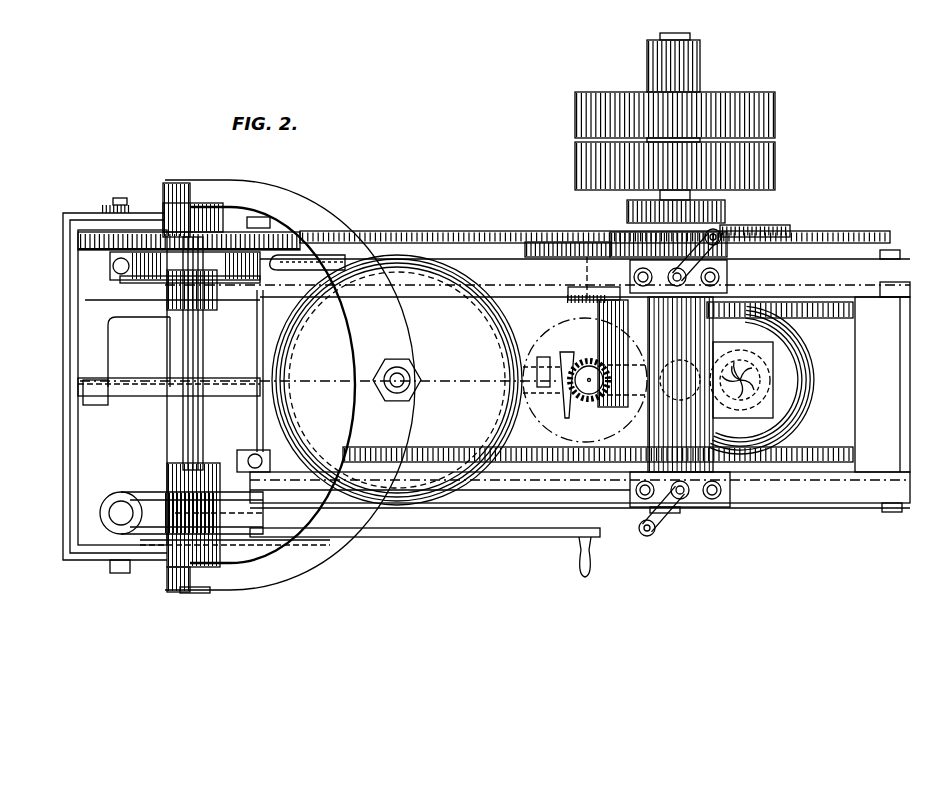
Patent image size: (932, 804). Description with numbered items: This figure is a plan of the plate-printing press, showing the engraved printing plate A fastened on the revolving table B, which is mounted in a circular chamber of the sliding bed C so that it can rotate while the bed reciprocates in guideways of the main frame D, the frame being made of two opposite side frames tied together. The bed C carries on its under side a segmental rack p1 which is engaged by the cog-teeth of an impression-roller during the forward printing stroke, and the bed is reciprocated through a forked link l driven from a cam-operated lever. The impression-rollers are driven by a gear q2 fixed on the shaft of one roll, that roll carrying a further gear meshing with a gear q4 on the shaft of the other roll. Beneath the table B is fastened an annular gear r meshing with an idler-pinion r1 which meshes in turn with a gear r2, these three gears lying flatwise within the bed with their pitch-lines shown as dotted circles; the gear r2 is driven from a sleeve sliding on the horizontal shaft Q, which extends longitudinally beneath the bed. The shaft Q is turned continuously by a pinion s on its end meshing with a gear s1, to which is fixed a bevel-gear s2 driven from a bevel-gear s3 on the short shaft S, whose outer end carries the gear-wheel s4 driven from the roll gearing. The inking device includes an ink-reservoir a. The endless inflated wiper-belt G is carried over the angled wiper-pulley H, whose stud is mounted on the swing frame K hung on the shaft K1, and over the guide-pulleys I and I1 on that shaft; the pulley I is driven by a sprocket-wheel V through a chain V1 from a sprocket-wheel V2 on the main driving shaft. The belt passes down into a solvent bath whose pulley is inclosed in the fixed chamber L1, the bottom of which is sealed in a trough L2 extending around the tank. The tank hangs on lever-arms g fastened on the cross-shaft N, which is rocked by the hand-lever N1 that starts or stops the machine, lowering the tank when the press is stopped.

The trough L2 is at (63, 284).
The chamber or trunk L1 is at (90, 438).
The swing frame K is at (343, 197).
The shaft K1 is at (200, 372).
The sprocket-wheel V is at (92, 231).
The chain V1 is at (440, 226).
The sprocket-wheel V2 is at (791, 232).
The segmental rack p1 is at (684, 40).
The gear q2 is at (726, 214).
The gear q4 is at (722, 255).
The gear-wheel s4 is at (524, 249).
The main frame D is at (826, 496).
The idler-pinion r1 is at (680, 384).
The gear r2 is at (585, 380).
The short shaft S is at (580, 272).
The bevel-gear s3 is at (566, 301).
The bevel-gear s2 is at (598, 333).
The gear s1 is at (606, 357).
The pinion s is at (584, 388).
The annular gear r is at (741, 369).
The revolving table B is at (806, 380).
The engraved printing plate A is at (800, 416).
The sliding bed C is at (780, 323).
The cross-shaft N is at (538, 381).
The wiper-pulley H is at (320, 380).
The ink-reservoir a is at (456, 488).
The lever-arms g is at (149, 206).
The wiper-belt G is at (113, 266).
The guide-pulley I is at (126, 283).
The forked link l is at (140, 393).
The horizontal shaft Q is at (150, 395).
The guide-pulley I1 is at (140, 492).
The hand-lever N1 is at (543, 538).